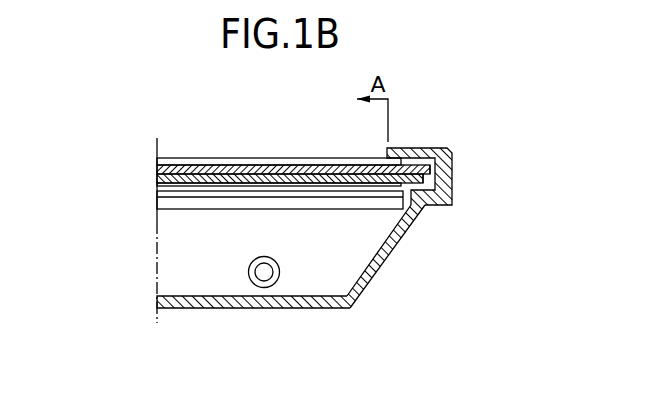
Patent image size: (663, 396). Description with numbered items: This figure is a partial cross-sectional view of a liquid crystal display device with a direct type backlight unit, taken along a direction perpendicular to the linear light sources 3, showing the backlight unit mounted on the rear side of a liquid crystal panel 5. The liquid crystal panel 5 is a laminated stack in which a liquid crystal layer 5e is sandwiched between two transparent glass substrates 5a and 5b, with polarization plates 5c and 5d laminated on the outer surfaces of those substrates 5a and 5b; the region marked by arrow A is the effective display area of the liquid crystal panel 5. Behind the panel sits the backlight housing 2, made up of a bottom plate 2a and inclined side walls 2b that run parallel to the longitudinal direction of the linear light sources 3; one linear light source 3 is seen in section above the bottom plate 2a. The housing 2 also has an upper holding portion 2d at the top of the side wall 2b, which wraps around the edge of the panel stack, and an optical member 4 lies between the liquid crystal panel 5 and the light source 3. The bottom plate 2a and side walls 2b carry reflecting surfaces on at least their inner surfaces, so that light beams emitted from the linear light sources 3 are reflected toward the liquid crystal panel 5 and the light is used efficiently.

The housing 2 is at (320, 232).
The bottom plate 2a is at (198, 302).
The side wall 2b is at (405, 233).
The top holding portion of frame 2d is at (450, 148).
The linear light source 3 is at (264, 288).
The optical sheet / light guide 4 is at (198, 210).
The liquid crystal panel 5 is at (275, 151).
The transparent substrate 5a is at (181, 164).
The transparent substrate 5b is at (222, 178).
The polarization plate 5c is at (263, 162).
The polarization plate 5d is at (308, 187).
The liquid crystal layer 5e is at (352, 170).